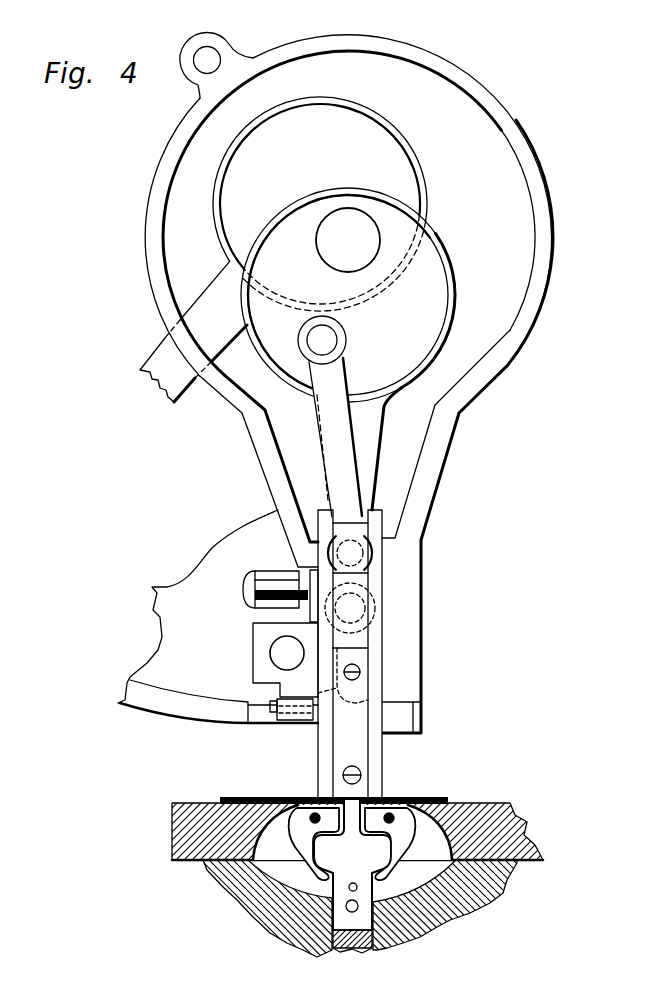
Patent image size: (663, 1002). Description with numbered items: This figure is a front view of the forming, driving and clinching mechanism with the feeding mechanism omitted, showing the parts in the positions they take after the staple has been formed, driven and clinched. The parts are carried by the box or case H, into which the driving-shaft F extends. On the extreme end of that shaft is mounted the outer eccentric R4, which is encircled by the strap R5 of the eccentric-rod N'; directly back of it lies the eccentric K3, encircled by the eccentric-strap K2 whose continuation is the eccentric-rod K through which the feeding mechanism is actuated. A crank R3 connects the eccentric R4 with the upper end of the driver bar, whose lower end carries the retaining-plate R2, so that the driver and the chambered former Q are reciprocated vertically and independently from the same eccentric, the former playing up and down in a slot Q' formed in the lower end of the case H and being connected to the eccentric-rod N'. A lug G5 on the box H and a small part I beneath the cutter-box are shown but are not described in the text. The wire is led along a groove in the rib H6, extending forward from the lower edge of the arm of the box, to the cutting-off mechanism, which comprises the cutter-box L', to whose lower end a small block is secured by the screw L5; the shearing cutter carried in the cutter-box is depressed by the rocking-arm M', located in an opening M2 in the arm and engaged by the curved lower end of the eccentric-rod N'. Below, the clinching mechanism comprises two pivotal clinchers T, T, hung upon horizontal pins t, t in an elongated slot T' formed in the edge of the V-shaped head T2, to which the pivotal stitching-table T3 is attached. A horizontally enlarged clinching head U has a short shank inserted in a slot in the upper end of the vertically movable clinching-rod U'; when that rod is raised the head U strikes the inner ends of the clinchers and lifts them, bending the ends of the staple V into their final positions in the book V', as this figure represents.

The box or case H is at (554, 296).
The lug G5 is at (214, 46).
The eccentric K3 is at (320, 204).
The eccentric-strap K2 is at (428, 188).
The eccentric-rod K is at (193, 331).
The strap R5 is at (456, 270).
The outer eccentric R4 is at (348, 295).
The driving-shaft F is at (348, 240).
The eccentric-rod N' is at (356, 440).
The crank R3 is at (326, 427).
The rib H6 is at (219, 701).
The opening M2 is at (265, 574).
The rocking-arm M' is at (231, 591).
The cutter-box L' is at (272, 658).
The screw L5 is at (270, 654).
The piece I is at (276, 721).
The chambered former Q is at (360, 655).
The slot Q' is at (384, 613).
The retaining-plate R2 is at (350, 761).
The pivotal stitching-table T3 is at (505, 805).
The V-shaped head T2 is at (413, 856).
The staple V is at (312, 791).
The book V' is at (422, 790).
The clinching head U is at (352, 865).
The clinching-rod U' is at (354, 918).
The elongated slot T' is at (314, 829).
The pivotal clinchers T is at (390, 844).
The horizontal pins t is at (352, 819).